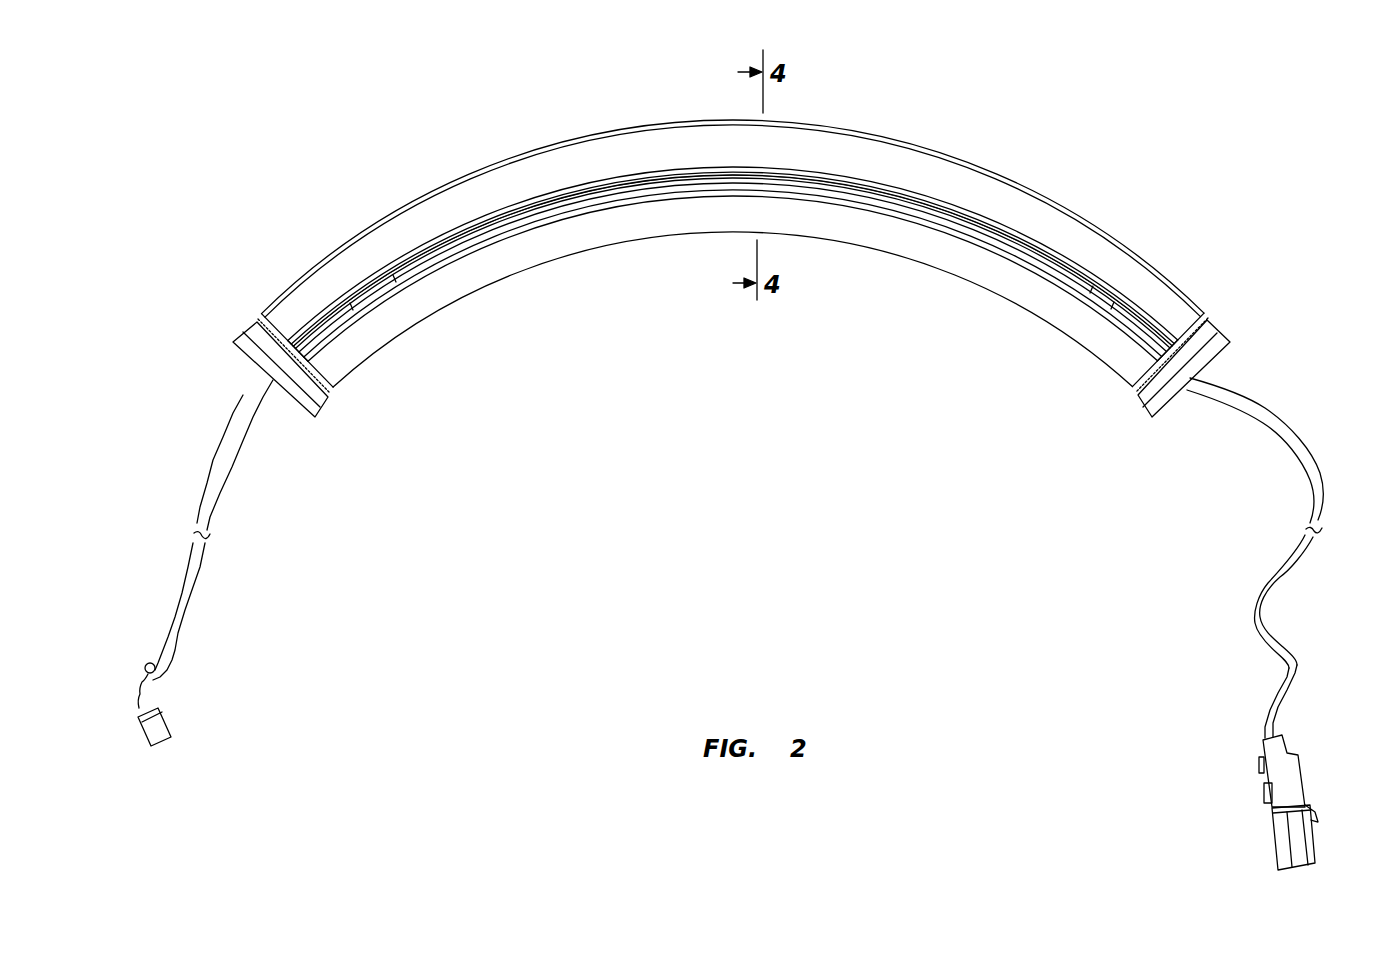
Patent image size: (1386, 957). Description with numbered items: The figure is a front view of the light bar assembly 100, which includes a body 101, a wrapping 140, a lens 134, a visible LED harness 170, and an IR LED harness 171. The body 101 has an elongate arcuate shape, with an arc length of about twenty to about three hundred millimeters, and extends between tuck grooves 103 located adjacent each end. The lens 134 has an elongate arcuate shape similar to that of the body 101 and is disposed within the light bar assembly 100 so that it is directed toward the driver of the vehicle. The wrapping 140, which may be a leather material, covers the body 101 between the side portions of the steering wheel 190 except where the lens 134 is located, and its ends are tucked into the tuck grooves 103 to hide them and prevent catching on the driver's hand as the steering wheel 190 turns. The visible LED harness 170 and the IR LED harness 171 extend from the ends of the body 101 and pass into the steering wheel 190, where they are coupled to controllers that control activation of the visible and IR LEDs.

The light bar assembly 100 is at (1016, 114).
The body 101 is at (797, 118).
The tuck grooves 103 is at (258, 321).
The lens 134 is at (684, 180).
The wrapping 140 is at (1123, 240).
The visible LED harness 170 is at (200, 505).
The IR LED harness 171 is at (1303, 432).
The steering wheel 190 is at (240, 335).